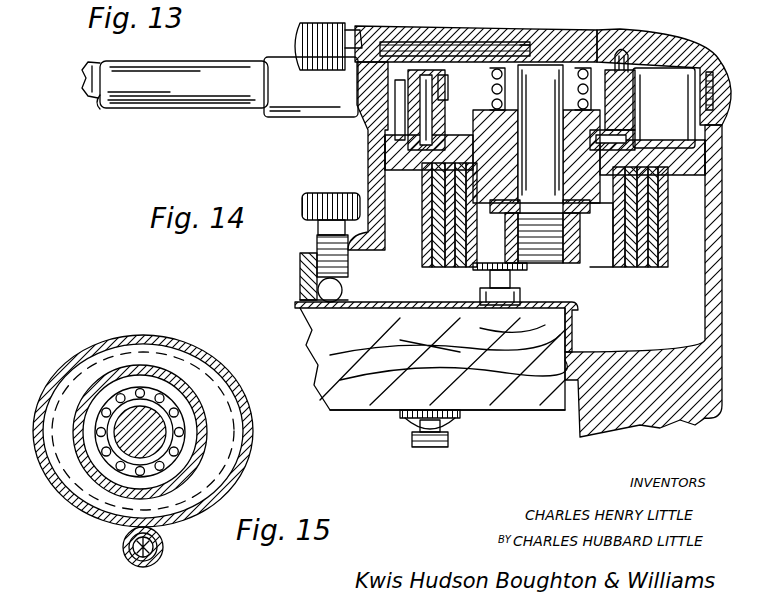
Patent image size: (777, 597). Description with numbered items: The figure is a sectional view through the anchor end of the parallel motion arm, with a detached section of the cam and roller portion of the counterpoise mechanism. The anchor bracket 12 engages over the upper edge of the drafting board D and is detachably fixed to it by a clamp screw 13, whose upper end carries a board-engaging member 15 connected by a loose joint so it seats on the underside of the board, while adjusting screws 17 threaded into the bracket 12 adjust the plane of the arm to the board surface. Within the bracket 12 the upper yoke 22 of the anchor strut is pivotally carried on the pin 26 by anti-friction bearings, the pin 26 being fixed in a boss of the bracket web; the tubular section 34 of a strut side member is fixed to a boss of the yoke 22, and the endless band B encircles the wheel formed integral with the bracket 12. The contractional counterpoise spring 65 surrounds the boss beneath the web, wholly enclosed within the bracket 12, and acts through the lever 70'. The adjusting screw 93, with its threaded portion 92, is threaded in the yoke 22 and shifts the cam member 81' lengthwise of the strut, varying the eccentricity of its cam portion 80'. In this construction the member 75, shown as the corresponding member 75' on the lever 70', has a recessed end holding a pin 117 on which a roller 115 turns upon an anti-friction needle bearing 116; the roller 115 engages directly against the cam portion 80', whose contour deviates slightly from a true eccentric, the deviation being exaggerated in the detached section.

In FIG. 14, the anchor bracket 12 is at (716, 302).
In FIG. 14, the clamp screws 13 is at (438, 440).
In FIG. 14, the board-engaging member 15 is at (660, 118).
In FIG. 14, the adjusting screws 17 is at (338, 198).
In FIG. 14, the upper yoke 22 is at (690, 52).
In FIG. 14, the pin 26 is at (539, 160).
In FIG. 15, the pin 26 is at (152, 420).
In FIG. 14, the tubular section 34 is at (186, 90).
In FIG. 14, the contractional spring 65 is at (666, 268).
In FIG. 14, the lever 70' is at (642, 207).
In FIG. 14, the member 75 is at (328, 35).
In FIG. 14, the member 75' is at (423, 50).
In FIG. 14, the cam portion 80' is at (630, 110).
In FIG. 15, the cam portion 80' is at (169, 431).
In FIG. 14, the cam member 81' is at (637, 37).
In FIG. 14, the threaded portion 92 is at (465, 44).
In FIG. 14, the adjusting screw 93 is at (312, 63).
In FIG. 14, the roller 115 is at (406, 106).
In FIG. 15, the roller 115 is at (124, 545).
In FIG. 15, the anti-friction needle bearing 116 is at (134, 554).
In FIG. 14, the pin 117 is at (432, 150).
In FIG. 15, the pin 117 is at (158, 556).
In FIG. 14, the endless band B is at (94, 88).
In FIG. 14, the drafting board D is at (372, 395).